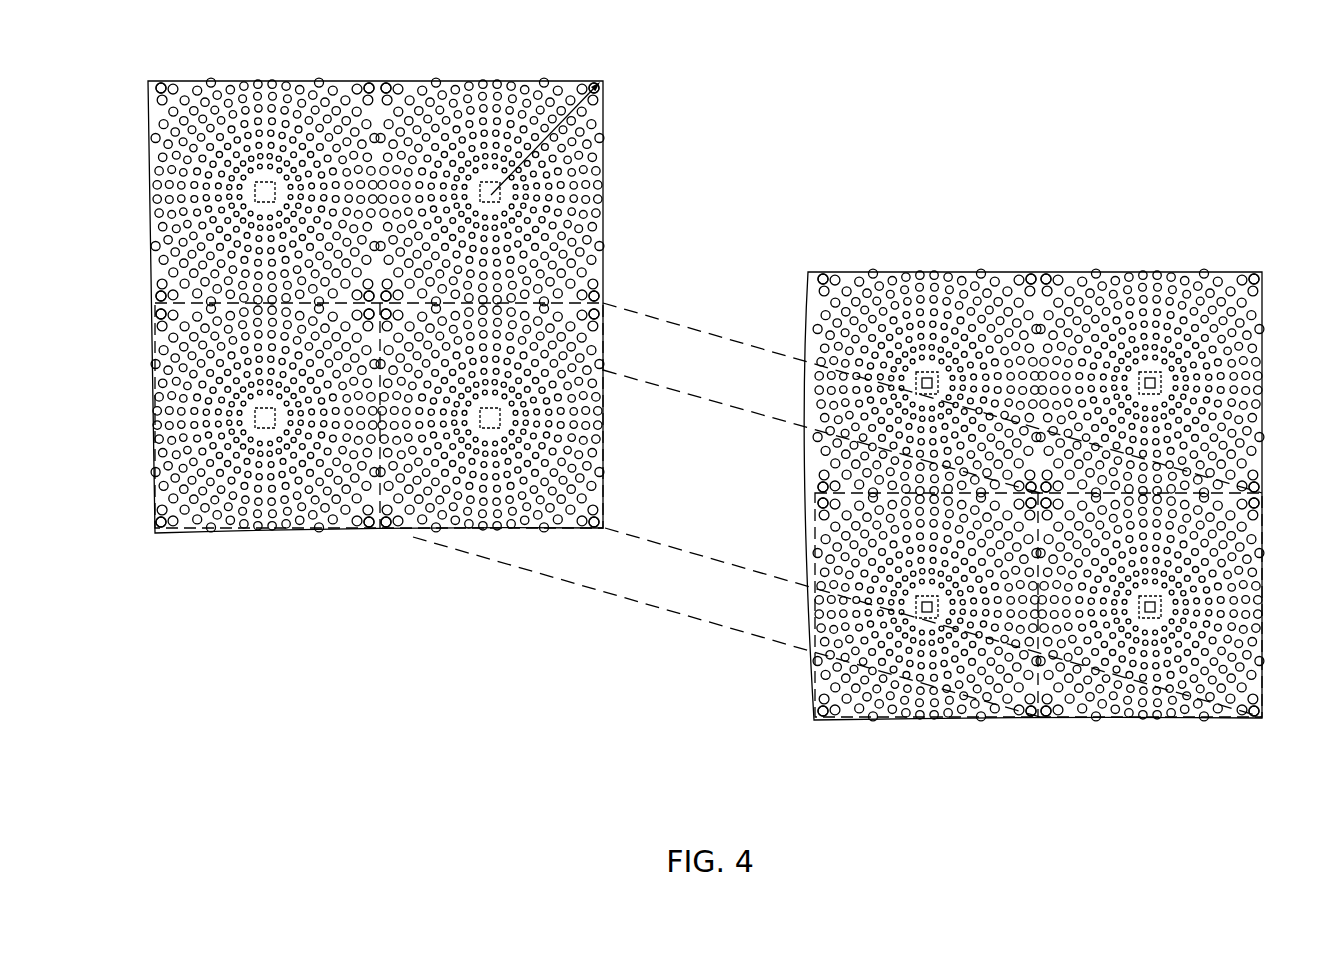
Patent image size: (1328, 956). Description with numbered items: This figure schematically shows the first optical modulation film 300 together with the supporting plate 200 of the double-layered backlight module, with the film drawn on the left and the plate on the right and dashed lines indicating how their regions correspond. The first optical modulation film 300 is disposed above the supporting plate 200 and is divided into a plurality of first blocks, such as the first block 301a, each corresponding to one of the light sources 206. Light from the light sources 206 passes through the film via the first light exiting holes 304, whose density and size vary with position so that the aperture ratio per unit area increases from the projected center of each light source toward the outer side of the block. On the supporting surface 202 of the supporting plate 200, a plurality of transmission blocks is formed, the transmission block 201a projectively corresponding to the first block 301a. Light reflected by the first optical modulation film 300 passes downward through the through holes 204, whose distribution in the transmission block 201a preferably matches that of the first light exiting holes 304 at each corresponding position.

The first optical modulation film 300 is at (382, 315).
The first light exiting holes 304 is at (494, 82).
The first block 301a is at (380, 470).
The supporting plate 200 is at (1034, 498).
The supporting surface 202 is at (1193, 272).
The through holes 204 is at (1214, 272).
The light sources 206 is at (1151, 371).
The transmission block 201a is at (1038, 665).